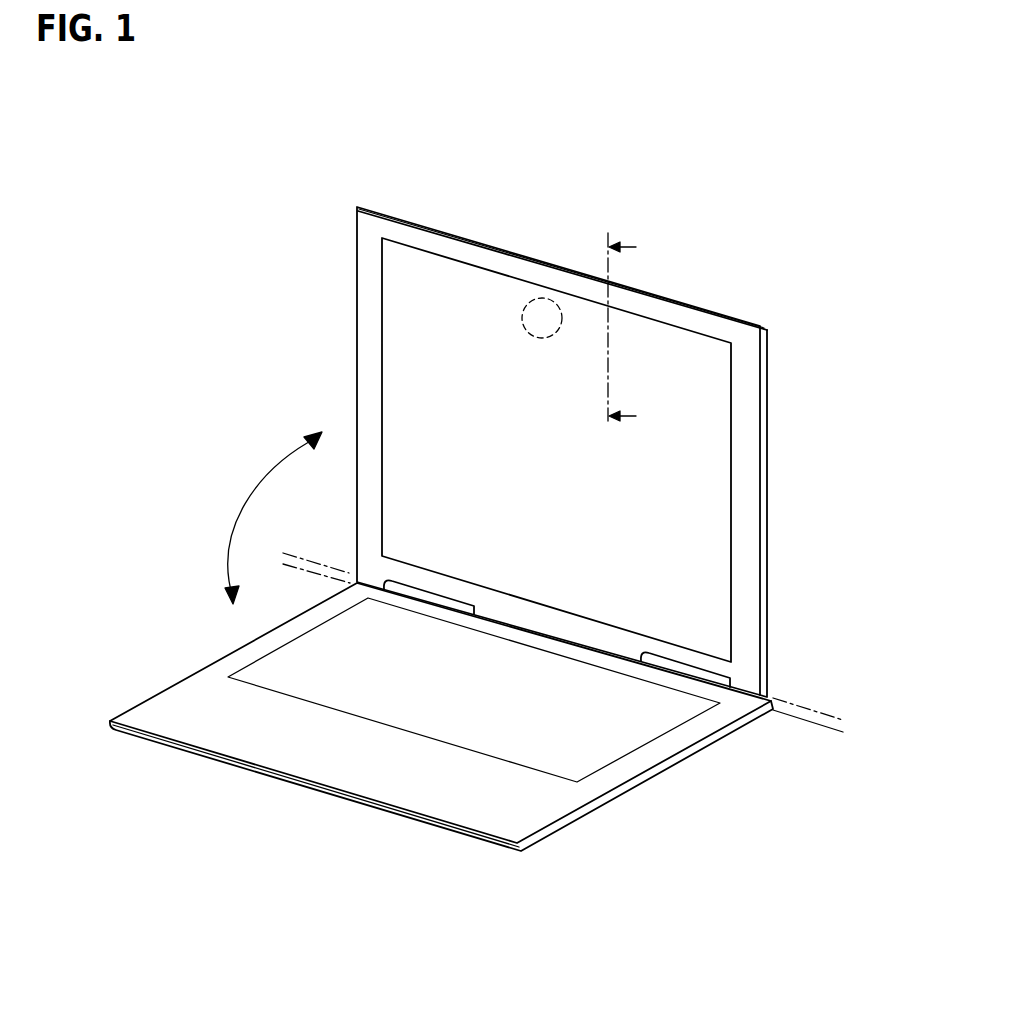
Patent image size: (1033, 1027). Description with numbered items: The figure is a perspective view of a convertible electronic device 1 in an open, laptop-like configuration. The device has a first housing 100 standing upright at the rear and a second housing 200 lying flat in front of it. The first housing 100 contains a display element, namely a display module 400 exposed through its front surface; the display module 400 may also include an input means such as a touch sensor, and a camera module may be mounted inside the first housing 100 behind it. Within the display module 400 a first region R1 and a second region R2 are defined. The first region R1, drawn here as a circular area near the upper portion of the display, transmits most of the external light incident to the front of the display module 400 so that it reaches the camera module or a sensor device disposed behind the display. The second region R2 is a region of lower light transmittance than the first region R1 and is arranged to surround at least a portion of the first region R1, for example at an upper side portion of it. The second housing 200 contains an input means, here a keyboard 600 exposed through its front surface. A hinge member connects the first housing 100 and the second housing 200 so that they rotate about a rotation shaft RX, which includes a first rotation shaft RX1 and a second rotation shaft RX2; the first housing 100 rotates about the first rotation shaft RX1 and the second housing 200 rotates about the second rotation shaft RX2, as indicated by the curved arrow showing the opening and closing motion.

The convertible electronic device 1 is at (198, 144).
The first housing 100 is at (762, 350).
The display module 400 is at (397, 325).
The first region R1 is at (542, 318).
The second region R2 is at (700, 463).
The second housing 200 is at (585, 808).
The keyboard 600 is at (597, 732).
The first rotation shaft RX1 is at (833, 712).
The second rotation shaft RX2 is at (833, 736).
The rotation shaft RX is at (897, 705).